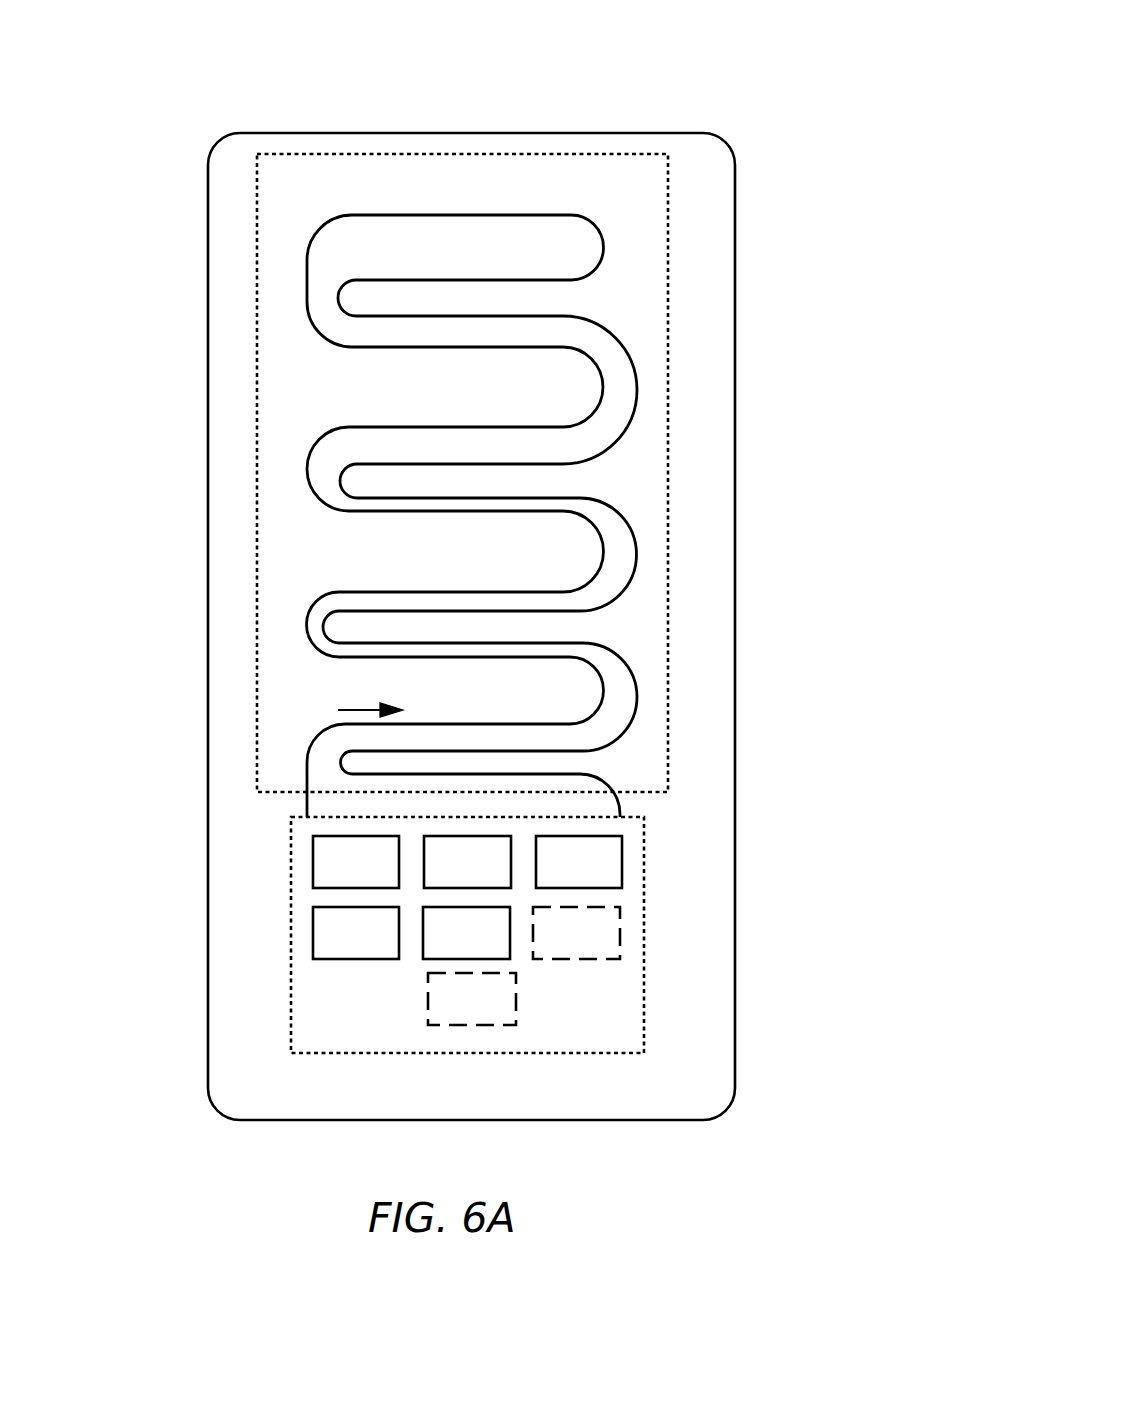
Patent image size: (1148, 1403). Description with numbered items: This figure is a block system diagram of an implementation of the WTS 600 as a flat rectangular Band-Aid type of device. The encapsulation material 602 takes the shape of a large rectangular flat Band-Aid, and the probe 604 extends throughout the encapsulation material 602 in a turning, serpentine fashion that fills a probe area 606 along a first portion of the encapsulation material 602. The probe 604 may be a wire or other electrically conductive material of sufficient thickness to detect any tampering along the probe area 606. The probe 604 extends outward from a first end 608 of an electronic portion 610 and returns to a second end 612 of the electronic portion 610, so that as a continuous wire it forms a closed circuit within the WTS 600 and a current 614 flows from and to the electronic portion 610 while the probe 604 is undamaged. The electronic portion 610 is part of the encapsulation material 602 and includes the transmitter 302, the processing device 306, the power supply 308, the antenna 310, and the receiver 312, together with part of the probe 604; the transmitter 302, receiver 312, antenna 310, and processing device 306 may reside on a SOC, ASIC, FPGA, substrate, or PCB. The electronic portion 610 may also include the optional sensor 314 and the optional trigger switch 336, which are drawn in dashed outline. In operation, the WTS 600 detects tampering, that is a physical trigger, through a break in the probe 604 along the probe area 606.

The WTS 600 is at (722, 68).
The encapsulation material 602 is at (471, 626).
The probe 604 is at (637, 701).
The probe area 606 is at (462, 473).
The first end 608 is at (307, 813).
The electronic portion 610 is at (467, 935).
The second end 612 is at (622, 812).
The current 614 is at (348, 707).
The transmitter 302 is at (356, 862).
The processing device 306 is at (467, 862).
The power supply 308 is at (579, 862).
The antenna 310 is at (356, 933).
The receiver 312 is at (466, 933).
The optional sensor 314 is at (576, 933).
The optional trigger switch 336 is at (472, 999).